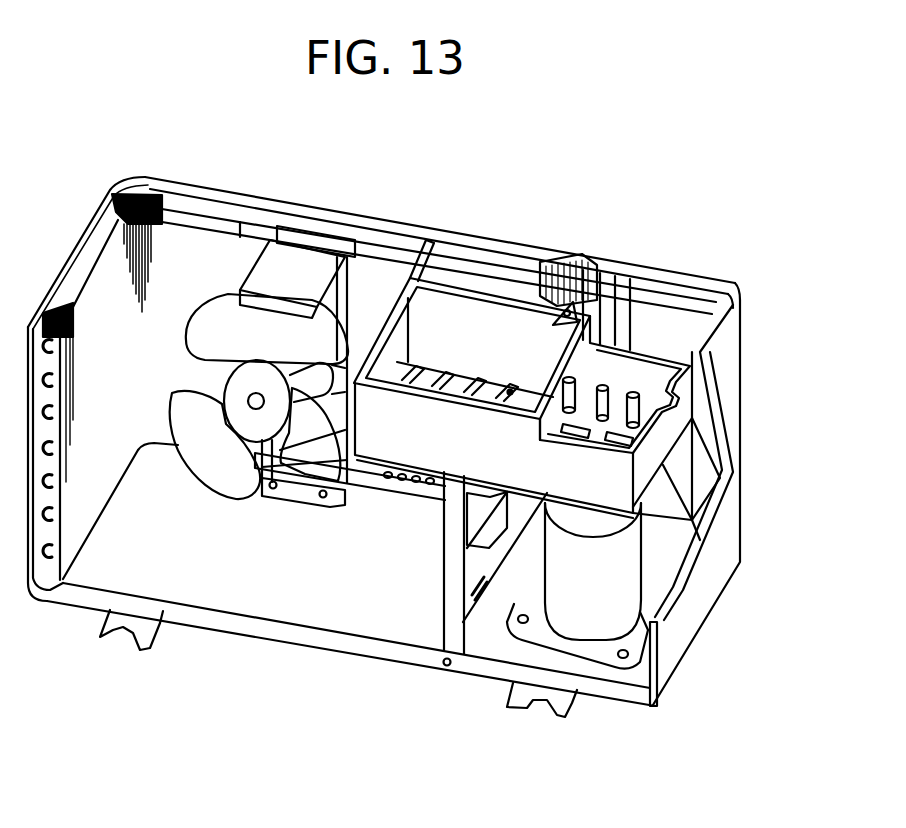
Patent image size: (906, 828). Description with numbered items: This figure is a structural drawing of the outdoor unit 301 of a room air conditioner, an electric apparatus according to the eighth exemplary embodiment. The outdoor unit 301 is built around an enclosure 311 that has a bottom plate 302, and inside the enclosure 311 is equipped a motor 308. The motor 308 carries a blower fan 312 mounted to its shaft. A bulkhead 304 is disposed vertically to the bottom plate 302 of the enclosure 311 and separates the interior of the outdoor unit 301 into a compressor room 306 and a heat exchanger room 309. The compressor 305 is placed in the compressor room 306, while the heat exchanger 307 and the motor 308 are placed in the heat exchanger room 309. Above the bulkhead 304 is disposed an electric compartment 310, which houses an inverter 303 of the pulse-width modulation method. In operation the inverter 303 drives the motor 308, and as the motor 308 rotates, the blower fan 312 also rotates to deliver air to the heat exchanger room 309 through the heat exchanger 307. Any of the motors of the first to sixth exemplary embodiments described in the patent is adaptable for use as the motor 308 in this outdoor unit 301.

The outdoor unit 301 is at (518, 214).
The bottom plate 302 is at (263, 587).
The inverter 303 is at (407, 397).
The bulkhead 304 is at (452, 598).
The compressor 305 is at (623, 582).
The compressor room 306 is at (497, 645).
The heat exchanger 307 is at (228, 208).
The motor 308 is at (343, 360).
The heat exchanger room 309 is at (90, 568).
The electric compartment 310 is at (685, 362).
The enclosure 311 is at (382, 228).
The blower fan 312 is at (210, 468).